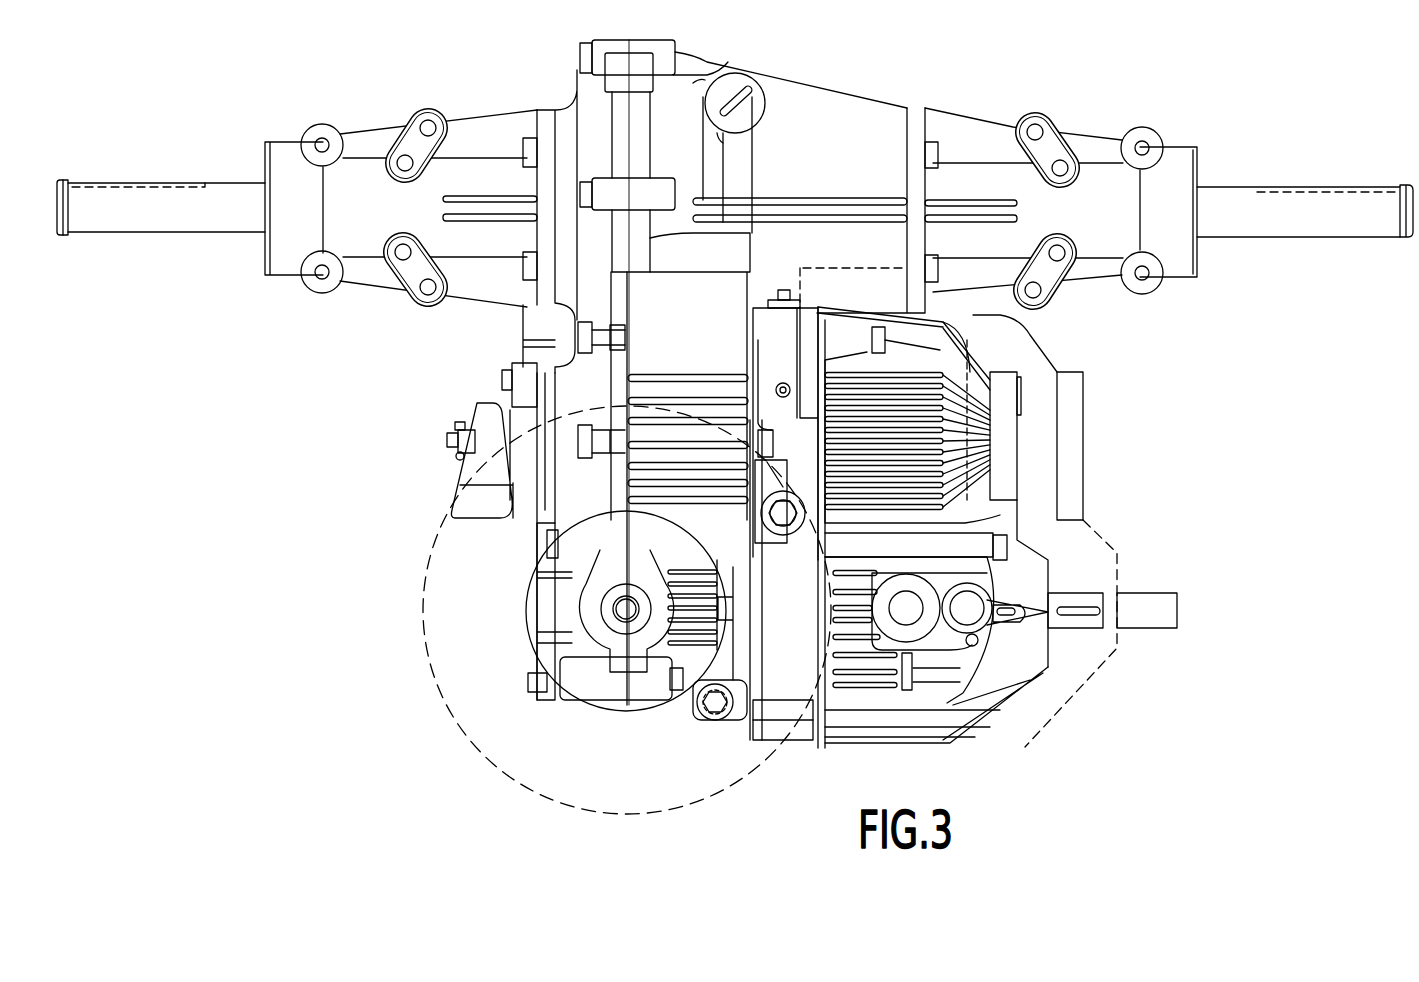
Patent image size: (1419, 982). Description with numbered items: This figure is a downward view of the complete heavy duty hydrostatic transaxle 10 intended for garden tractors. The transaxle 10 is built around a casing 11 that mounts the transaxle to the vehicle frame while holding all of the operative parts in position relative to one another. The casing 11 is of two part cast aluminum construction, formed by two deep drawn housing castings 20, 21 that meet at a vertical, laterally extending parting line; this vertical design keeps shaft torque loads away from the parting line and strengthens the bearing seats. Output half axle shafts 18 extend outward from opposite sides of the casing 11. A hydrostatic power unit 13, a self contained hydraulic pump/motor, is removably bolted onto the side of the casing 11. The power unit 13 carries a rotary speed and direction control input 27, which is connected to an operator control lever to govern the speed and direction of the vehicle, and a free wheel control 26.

The transaxle 10 is at (1108, 320).
The casing 11 is at (1183, 260).
The hydrostatic power unit 13 is at (1013, 707).
The output half axle shafts 18 is at (156, 224).
The housing casting 20 is at (777, 83).
The housing casting 21 is at (580, 107).
The free wheel control 26 is at (777, 290).
The rotary speed and direction control input 27 is at (905, 598).